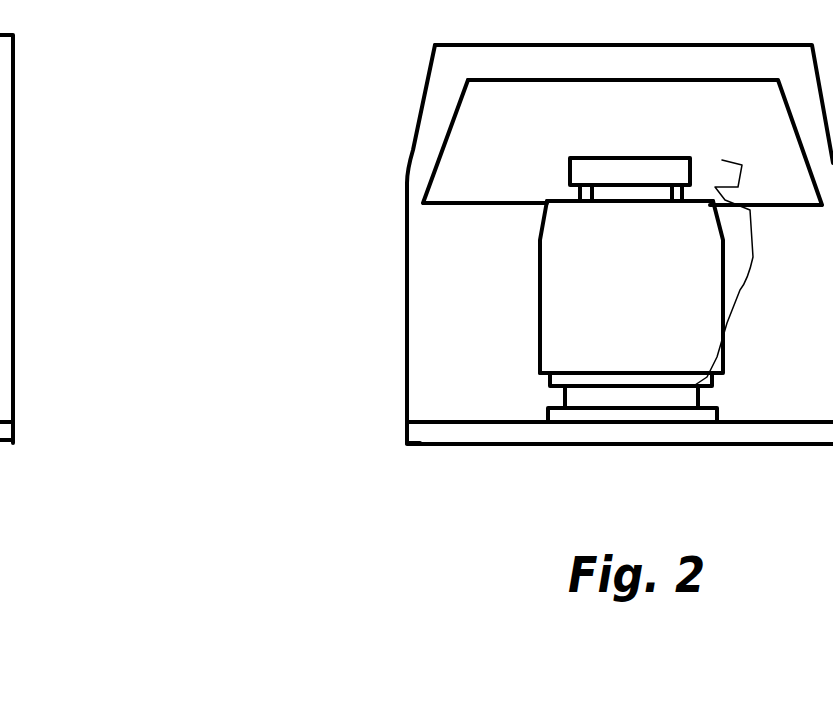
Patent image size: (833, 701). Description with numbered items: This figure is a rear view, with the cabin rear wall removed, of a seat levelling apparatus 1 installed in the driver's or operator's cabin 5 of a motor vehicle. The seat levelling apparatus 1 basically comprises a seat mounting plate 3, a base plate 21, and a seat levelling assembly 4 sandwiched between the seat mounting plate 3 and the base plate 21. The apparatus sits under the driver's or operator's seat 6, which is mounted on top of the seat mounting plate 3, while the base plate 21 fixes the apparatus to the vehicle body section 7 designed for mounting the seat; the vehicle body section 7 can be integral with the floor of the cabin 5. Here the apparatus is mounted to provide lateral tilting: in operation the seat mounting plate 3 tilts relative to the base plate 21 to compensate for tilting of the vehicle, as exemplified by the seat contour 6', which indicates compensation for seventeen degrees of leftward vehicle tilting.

The seat levelling apparatus 1 is at (0, 395).
The seat mounting plate 3 is at (578, 378).
The seat levelling assembly 4 is at (600, 395).
The cabin 5 is at (380, 100).
The seat 6 is at (361, 264).
The seat contour 6' is at (741, 331).
The vehicle body section 7 is at (0, 426).
The base plate 21 is at (582, 418).